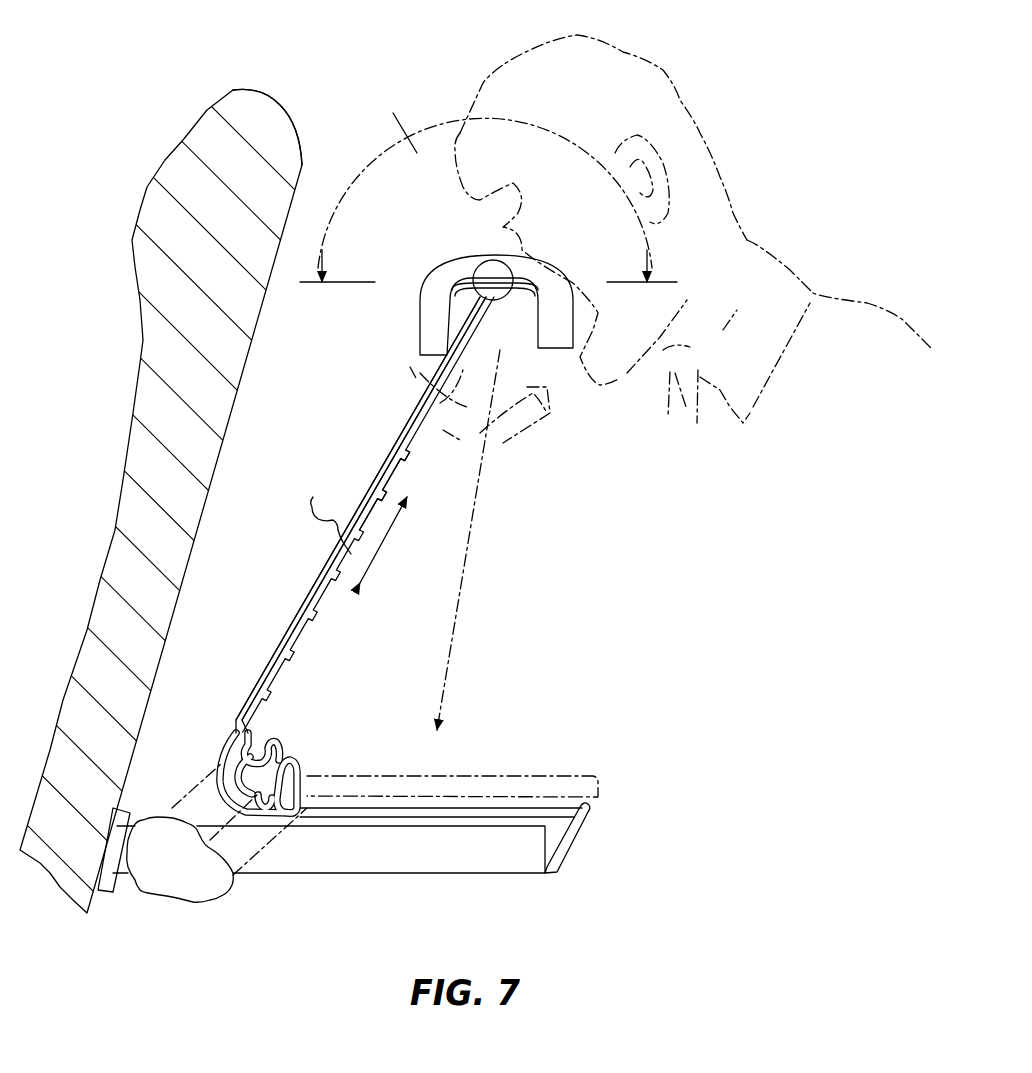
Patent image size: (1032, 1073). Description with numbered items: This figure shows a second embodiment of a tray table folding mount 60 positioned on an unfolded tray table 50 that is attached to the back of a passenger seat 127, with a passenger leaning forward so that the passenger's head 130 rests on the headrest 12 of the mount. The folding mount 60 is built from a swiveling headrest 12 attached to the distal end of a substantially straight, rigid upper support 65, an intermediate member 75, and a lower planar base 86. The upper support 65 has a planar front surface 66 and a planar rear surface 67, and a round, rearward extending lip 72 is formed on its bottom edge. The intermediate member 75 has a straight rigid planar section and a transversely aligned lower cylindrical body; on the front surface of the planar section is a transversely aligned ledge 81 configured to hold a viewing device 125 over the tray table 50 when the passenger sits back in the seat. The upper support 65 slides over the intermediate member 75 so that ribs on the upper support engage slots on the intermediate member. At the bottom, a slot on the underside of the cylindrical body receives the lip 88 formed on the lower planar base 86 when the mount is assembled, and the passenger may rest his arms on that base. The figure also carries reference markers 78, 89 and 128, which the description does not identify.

The headrest 12 is at (410, 305).
The tray table 50 is at (383, 862).
The tray table folding mount 60 is at (313, 330).
The upper support 65 is at (410, 420).
The planar front surface 66 is at (410, 442).
The planar rear surface 67 is at (415, 432).
The lip 72 is at (340, 587).
The intermediate member 75 is at (273, 645).
The bumper 78 is at (207, 907).
The ledge 81 is at (313, 497).
The lower planar base 86 is at (613, 833).
The lip 88 is at (300, 773).
The flange 89 is at (570, 853).
The viewing device 125 is at (560, 767).
The passenger seat 127 is at (285, 110).
The occupant 128 is at (847, 287).
The passenger's head 130 is at (677, 110).